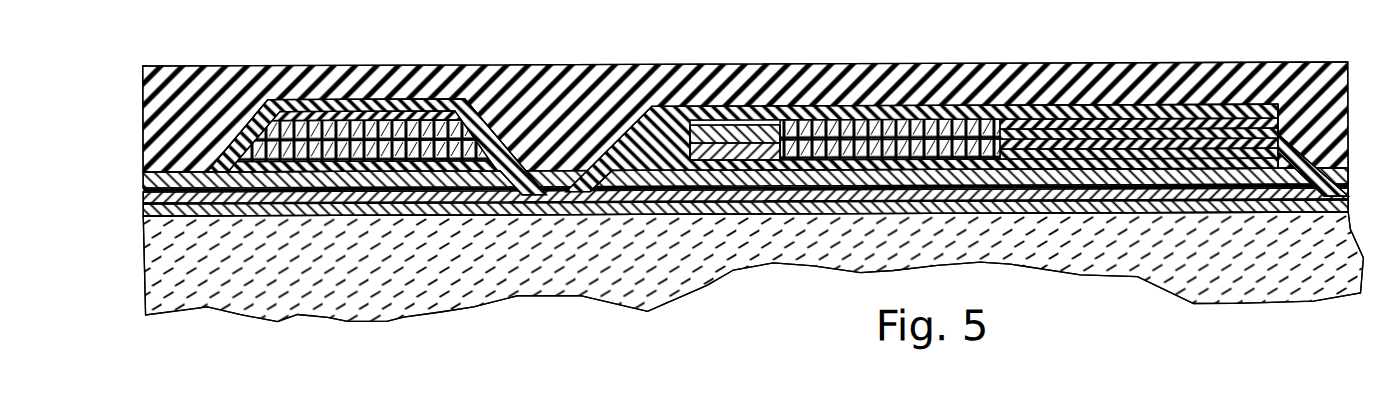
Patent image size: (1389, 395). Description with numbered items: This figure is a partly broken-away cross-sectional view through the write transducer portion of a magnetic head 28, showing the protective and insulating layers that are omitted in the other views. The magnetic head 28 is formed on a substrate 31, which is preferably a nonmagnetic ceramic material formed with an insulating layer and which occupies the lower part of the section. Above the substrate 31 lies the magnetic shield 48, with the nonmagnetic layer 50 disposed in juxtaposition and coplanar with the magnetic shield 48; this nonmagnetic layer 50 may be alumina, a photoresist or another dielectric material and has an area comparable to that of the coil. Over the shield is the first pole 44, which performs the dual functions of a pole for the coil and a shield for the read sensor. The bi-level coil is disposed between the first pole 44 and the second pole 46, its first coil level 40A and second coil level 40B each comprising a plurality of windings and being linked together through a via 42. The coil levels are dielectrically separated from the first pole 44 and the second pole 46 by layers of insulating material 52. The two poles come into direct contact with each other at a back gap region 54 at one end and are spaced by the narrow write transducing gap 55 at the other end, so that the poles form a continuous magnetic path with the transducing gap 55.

The magnetic head 28 is at (1147, 340).
The substrate 31 is at (688, 272).
The first coil level 40A is at (517, 113).
The second coil level 40B is at (465, 110).
The via 42 is at (745, 130).
The first pole 44 is at (132, 192).
The second pole 46 is at (152, 182).
The magnetic shield 48 is at (143, 210).
The nonmagnetic layer 50 is at (1327, 207).
The layers of insulating material 52 is at (283, 106).
The back gap region 54 is at (560, 166).
The write transducing gap 55 is at (143, 190).